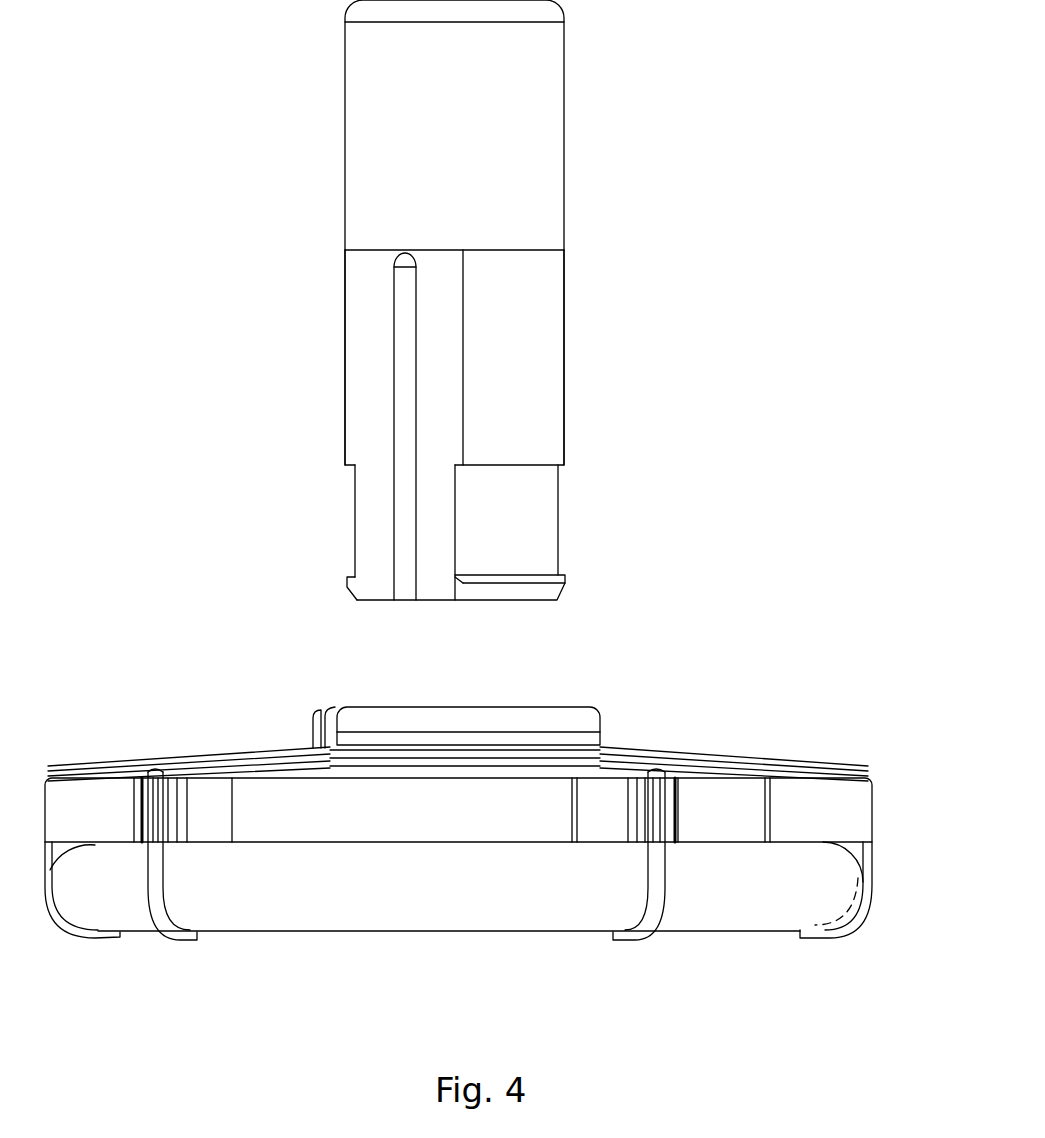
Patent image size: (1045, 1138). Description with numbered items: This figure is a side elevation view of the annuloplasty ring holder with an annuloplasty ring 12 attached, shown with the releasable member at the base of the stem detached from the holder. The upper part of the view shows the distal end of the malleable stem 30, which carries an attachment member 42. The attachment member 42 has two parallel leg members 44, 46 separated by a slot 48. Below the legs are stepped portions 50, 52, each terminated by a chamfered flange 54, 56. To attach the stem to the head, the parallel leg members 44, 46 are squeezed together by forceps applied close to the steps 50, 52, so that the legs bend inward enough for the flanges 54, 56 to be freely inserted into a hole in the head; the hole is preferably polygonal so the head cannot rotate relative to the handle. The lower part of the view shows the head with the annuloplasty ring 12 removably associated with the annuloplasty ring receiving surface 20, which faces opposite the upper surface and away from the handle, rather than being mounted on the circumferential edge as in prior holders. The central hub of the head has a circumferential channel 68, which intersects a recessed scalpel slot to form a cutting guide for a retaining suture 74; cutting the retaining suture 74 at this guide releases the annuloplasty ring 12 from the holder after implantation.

The annuloplasty ring 12 is at (753, 885).
The annuloplasty ring receiving surface 20 is at (458, 869).
The malleable stem 30 is at (318, 0).
The attachment member 42 is at (563, 498).
The parallel leg member 44 is at (518, 413).
The parallel leg member 46 is at (372, 403).
The slot 48 is at (407, 578).
The stepped portion 50 is at (348, 528).
The stepped portion 52 is at (574, 545).
The chamfered flange 54 is at (348, 587).
The chamfered flange 56 is at (590, 617).
The circumferential channel 68 is at (490, 745).
The retaining suture 74 is at (435, 757).